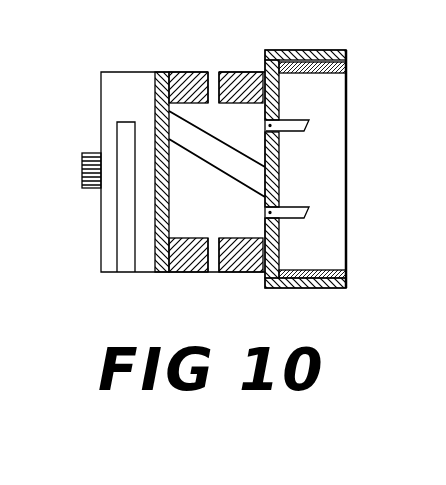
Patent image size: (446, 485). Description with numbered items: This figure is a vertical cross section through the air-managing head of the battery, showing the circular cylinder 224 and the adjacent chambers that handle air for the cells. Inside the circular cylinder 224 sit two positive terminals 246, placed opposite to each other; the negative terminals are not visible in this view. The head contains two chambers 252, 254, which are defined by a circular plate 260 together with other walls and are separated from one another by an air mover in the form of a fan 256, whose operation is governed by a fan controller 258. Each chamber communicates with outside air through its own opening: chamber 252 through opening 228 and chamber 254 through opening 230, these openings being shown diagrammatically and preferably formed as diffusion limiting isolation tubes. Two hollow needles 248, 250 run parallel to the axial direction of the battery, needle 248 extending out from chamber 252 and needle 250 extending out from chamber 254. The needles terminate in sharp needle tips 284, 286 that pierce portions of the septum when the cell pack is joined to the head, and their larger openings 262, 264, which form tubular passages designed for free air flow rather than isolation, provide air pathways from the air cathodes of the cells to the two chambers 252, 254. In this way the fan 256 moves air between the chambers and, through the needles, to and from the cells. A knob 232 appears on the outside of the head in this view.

The circular cylinder 224 is at (313, 50).
The opening 228 is at (213, 84).
The opening 230 is at (213, 262).
The adjustment knob 232 is at (83, 162).
The positive terminals 246 is at (318, 73).
The hollow needle 248 is at (288, 136).
The hollow needle 250 is at (296, 204).
The chamber 252 is at (248, 134).
The chamber 254 is at (225, 214).
The fan 256 is at (182, 137).
The fan controller 258 is at (127, 121).
The circular plate 260 is at (160, 272).
The opening 262 is at (262, 72).
The opening 264 is at (243, 272).
The needle tip 284 is at (309, 131).
The needle tip 286 is at (308, 208).